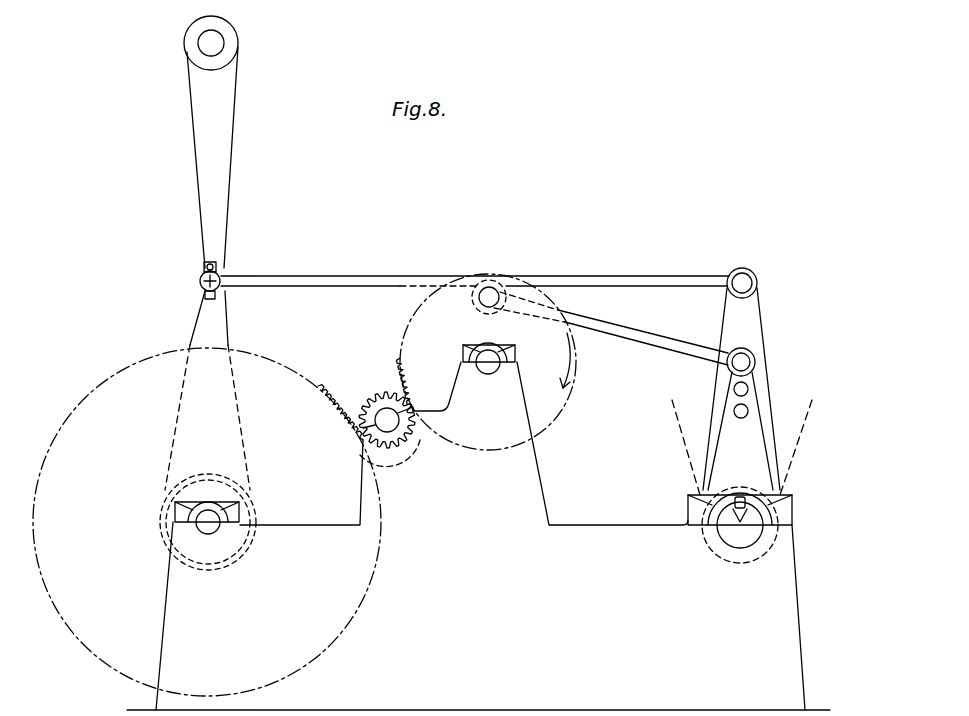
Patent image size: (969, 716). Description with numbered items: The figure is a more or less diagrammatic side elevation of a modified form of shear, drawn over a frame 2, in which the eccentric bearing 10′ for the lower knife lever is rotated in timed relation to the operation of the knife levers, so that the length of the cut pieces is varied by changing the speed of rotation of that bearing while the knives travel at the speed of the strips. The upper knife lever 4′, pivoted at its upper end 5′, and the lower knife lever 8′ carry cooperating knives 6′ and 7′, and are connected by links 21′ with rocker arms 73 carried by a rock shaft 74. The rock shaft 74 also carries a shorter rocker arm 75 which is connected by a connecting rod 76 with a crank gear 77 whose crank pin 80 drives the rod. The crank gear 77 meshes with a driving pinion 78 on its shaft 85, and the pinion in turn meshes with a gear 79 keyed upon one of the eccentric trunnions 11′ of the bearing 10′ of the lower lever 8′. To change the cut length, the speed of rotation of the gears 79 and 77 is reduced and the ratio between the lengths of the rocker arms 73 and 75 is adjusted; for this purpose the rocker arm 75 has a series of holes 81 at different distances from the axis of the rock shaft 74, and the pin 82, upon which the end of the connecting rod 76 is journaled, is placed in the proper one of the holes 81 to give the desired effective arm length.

The frame 2 is at (478, 526).
The upper knife lever 4′ is at (200, 134).
The upper pivot 5′ is at (200, 42).
The knife 6′ is at (204, 266).
The knife 7′ is at (199, 290).
The lower knife lever 8′ is at (198, 334).
The eccentric bearing 10′ is at (178, 496).
The eccentric trunnion 11′ is at (208, 535).
The links 21′ is at (375, 276).
The rocker arm 73 is at (755, 312).
The rock shaft 74 is at (749, 540).
The shorter rocker arm 75 is at (764, 378).
The connecting rod 76 is at (646, 338).
The crank gear 77 is at (420, 326).
The driving pinion 78 is at (384, 395).
The gear 79 is at (320, 381).
The crank pin 80 is at (491, 288).
The holes 81 is at (735, 408).
The pin 82 is at (752, 362).
The shaft 85 is at (390, 428).